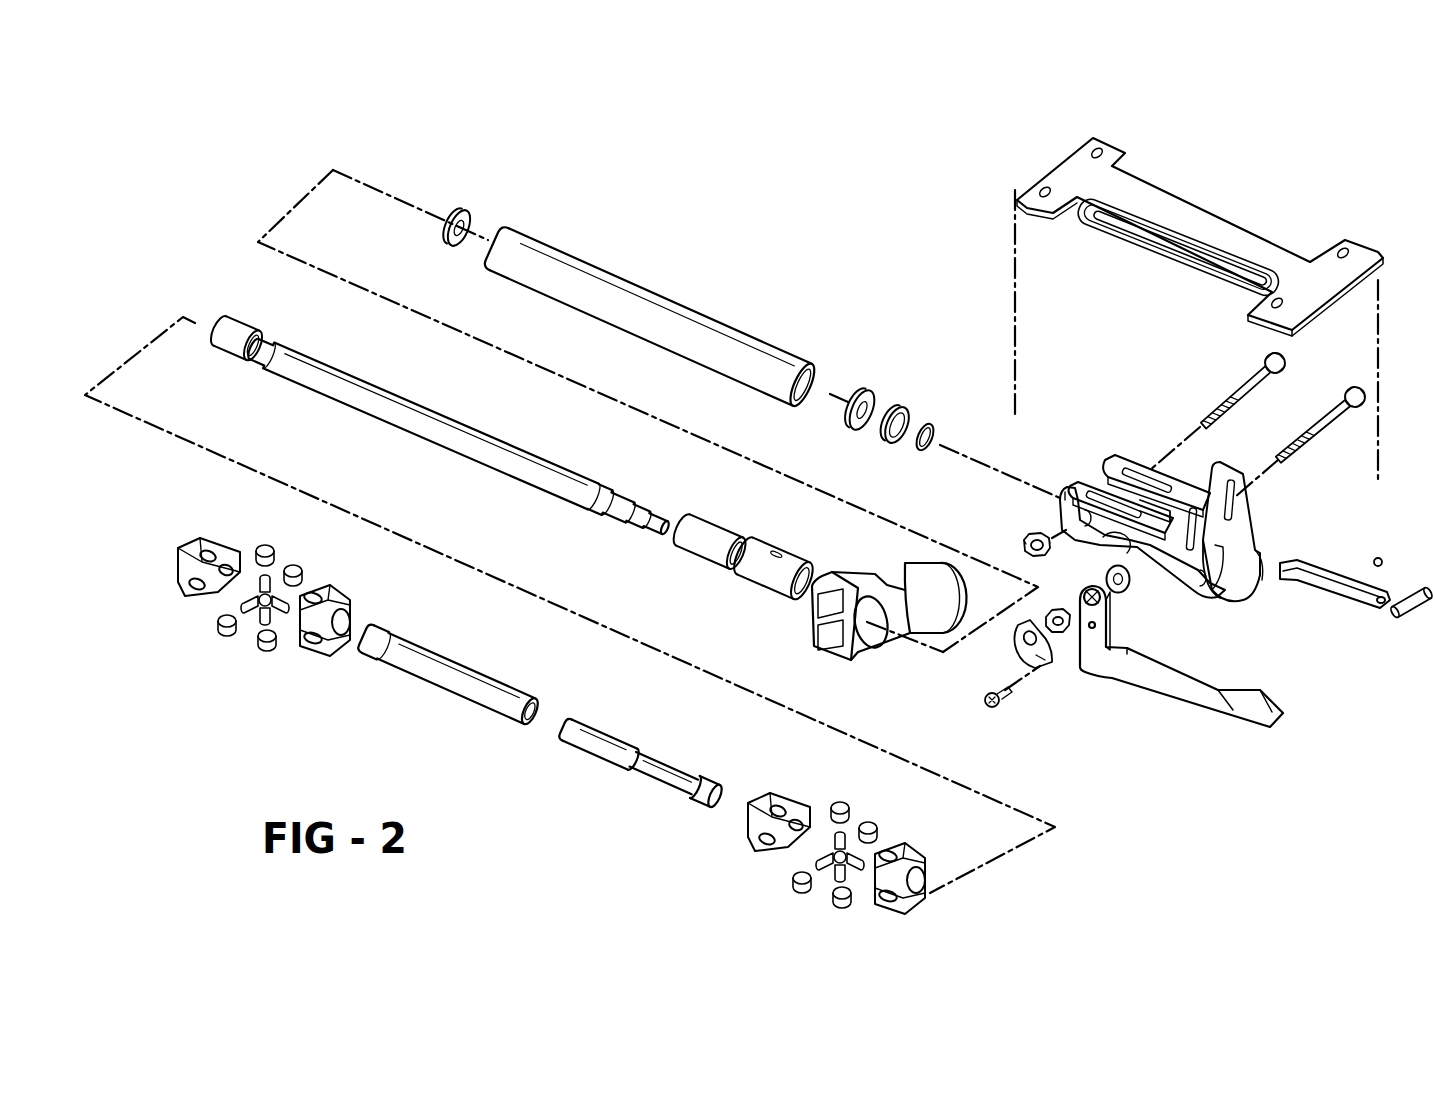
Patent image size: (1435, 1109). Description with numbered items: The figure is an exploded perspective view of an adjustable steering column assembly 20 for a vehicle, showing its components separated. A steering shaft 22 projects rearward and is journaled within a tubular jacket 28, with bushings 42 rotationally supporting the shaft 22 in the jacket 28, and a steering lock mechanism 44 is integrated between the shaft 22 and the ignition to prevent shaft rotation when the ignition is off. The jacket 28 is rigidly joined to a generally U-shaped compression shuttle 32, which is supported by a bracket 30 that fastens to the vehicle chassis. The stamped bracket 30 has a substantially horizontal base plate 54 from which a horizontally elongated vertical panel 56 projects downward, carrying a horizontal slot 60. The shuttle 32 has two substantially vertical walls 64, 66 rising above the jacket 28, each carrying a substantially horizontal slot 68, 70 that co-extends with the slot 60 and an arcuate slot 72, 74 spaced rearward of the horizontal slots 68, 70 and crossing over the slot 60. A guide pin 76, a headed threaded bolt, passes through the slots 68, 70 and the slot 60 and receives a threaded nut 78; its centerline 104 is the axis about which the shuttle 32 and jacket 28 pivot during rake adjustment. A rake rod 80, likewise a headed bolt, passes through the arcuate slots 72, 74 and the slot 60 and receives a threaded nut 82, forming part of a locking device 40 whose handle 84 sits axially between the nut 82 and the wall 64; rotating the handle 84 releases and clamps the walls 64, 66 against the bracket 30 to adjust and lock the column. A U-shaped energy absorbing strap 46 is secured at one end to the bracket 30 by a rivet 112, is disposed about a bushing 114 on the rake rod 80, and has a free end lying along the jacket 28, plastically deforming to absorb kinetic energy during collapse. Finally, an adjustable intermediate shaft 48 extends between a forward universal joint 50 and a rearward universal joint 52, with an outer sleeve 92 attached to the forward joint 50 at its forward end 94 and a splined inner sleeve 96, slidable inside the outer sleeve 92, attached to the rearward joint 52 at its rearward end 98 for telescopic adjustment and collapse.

The adjustable steering column assembly 20 is at (913, 192).
The steering shaft 22 is at (363, 377).
The jacket 28 is at (653, 287).
The bracket 30 is at (1172, 225).
The shuttle 32 is at (1165, 508).
The locking device 40 is at (1268, 796).
The bushings 42 is at (460, 207).
The steering lock mechanism 44 is at (859, 655).
The strap 46 is at (1330, 586).
The intermediate shaft 48 is at (578, 707).
The forward universal joint 50 is at (302, 680).
The rearward universal joint 52 is at (880, 940).
The base plate 54 is at (1278, 255).
The vertical panel 56 is at (1080, 212).
The slot 60 is at (1150, 250).
The vertical wall 64 is at (1133, 545).
The vertical wall 66 is at (1110, 470).
The horizontal slot 68 is at (1085, 490).
The horizontal slot 70 is at (1153, 493).
The arcuate slot 72 is at (1217, 560).
The arcuate slot 74 is at (1240, 537).
The guide pin 76 is at (1255, 395).
The threaded nut 78 is at (1030, 545).
The rake rod 80 is at (1340, 433).
The threaded nut 82 is at (1070, 640).
The handle 84 is at (1168, 690).
The outer sleeve 92 is at (488, 686).
The forward end 94 is at (364, 628).
The inner sleeve 96 is at (600, 732).
The rearward end 98 is at (717, 777).
The centerline 104 is at (1165, 440).
The rivet 112 is at (1383, 558).
The bushing 114 is at (1385, 618).